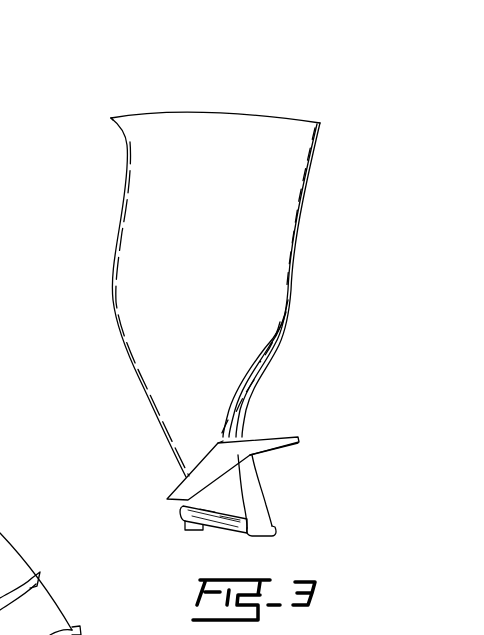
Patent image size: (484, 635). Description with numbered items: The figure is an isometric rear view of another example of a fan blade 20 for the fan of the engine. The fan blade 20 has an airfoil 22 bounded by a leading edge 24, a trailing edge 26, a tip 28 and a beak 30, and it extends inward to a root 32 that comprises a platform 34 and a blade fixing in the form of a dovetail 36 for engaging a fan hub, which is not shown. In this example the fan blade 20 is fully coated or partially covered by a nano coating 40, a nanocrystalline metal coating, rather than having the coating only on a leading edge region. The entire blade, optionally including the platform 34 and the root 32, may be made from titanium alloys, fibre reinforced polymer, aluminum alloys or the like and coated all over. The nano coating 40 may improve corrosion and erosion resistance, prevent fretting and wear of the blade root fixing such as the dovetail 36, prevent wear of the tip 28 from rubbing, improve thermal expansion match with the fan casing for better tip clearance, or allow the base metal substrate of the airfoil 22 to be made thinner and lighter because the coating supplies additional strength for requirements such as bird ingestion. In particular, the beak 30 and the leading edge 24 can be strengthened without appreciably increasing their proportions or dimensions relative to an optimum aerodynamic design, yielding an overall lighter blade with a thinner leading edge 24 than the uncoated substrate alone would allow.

The fan blade 20 is at (196, 262).
The airfoil 22 is at (157, 284).
The leading edge 24 is at (100, 314).
The trailing edge 26 is at (324, 180).
The tip 28 is at (264, 113).
The beak 30 is at (97, 112).
The root 32 is at (221, 453).
The platform 34 is at (312, 435).
The dovetail 36 is at (163, 528).
The nano coating 40 is at (257, 349).